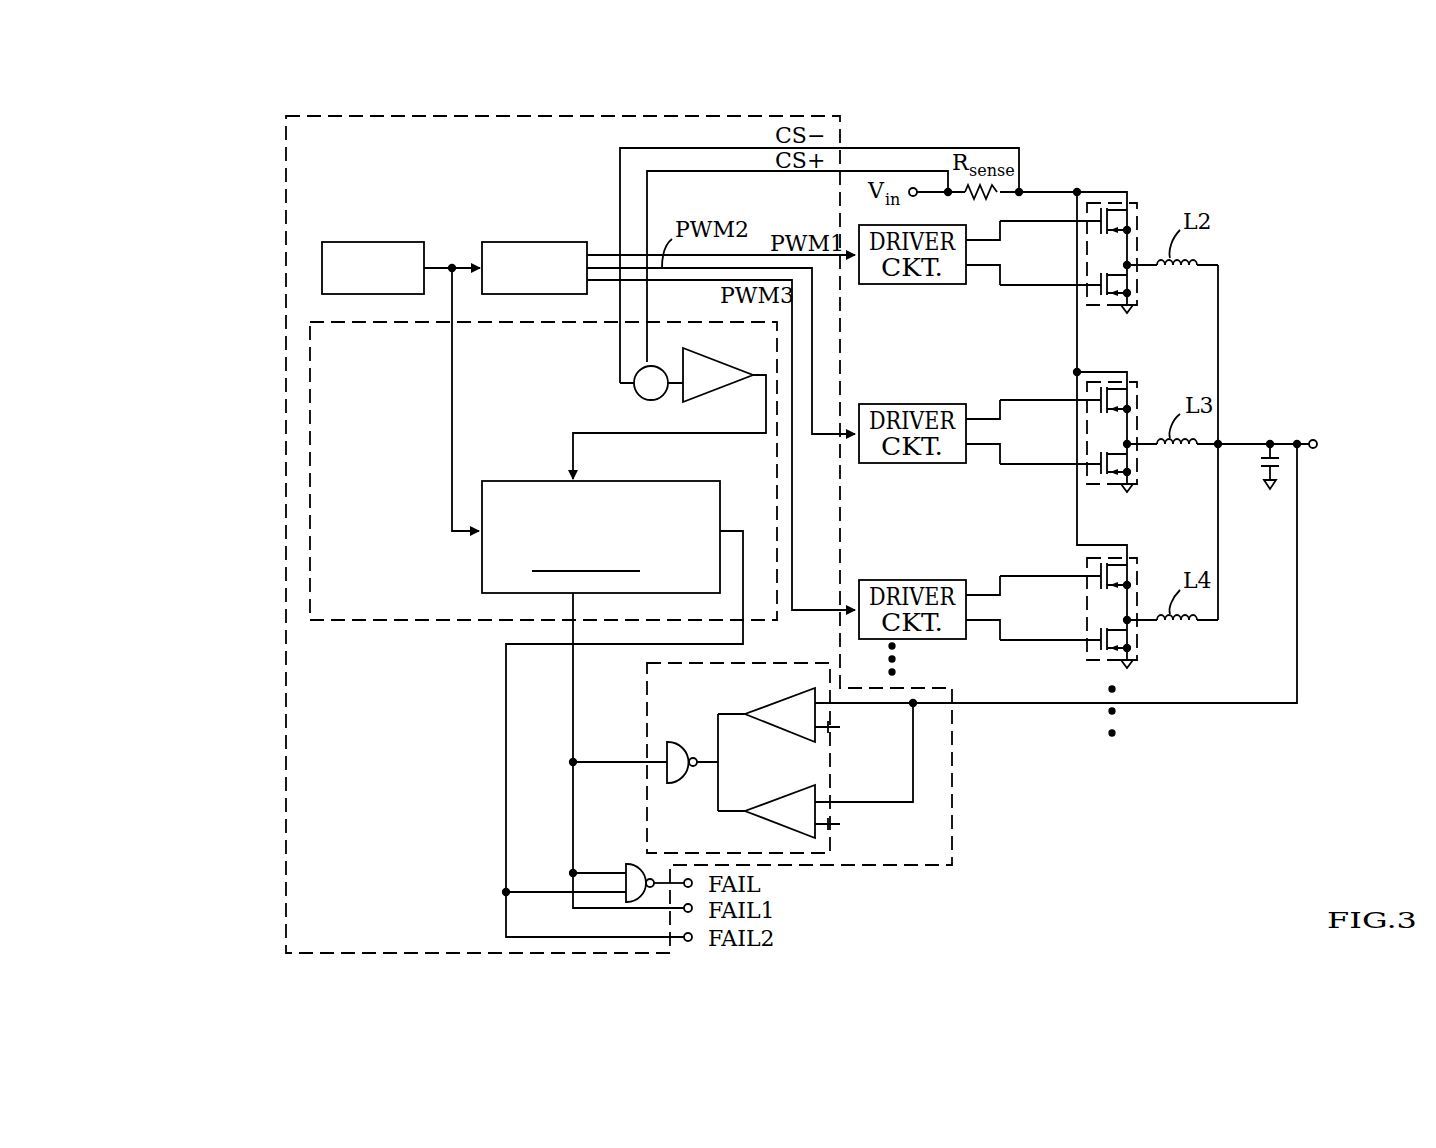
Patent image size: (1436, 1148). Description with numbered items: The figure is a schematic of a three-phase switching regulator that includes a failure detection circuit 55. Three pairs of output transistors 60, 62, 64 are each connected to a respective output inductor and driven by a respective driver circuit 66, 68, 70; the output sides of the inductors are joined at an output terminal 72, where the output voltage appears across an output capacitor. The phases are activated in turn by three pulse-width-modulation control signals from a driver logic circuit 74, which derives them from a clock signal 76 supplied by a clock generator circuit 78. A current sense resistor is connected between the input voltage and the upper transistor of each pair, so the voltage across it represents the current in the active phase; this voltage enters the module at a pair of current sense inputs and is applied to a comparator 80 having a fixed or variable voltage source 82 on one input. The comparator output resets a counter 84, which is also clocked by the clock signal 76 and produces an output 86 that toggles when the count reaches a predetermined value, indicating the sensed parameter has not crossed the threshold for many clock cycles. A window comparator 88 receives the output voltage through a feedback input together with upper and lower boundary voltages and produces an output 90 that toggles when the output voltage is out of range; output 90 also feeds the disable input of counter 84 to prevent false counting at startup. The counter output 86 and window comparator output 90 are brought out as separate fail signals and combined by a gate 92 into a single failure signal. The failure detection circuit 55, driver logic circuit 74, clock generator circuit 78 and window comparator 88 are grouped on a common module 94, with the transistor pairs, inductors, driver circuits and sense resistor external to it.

The common module 94 is at (286, 242).
The failure detection circuit 55 is at (360, 621).
The clock generator circuit 78 is at (366, 242).
The clock signal 76 is at (441, 268).
The driver logic circuit 74 is at (537, 242).
The comparator 80 is at (715, 360).
The voltage source 82 is at (639, 397).
The counter 84 is at (659, 481).
The counter output 86 is at (745, 568).
The window comparator 88 is at (647, 672).
The window comparator output 90 is at (594, 762).
The gate 92 is at (640, 864).
The driver circuit 66 is at (912, 285).
The driver circuit 68 is at (912, 463).
The driver circuit 70 is at (912, 578).
The pair of output transistors 60 is at (1138, 225).
The pair of output transistors 62 is at (1138, 405).
The pair of output transistors 64 is at (1138, 580).
The output terminal 72 is at (1315, 441).